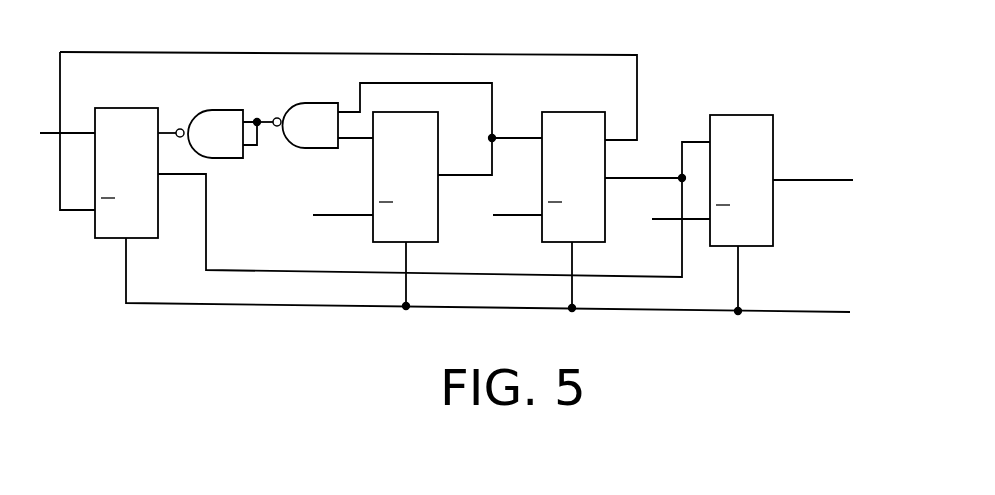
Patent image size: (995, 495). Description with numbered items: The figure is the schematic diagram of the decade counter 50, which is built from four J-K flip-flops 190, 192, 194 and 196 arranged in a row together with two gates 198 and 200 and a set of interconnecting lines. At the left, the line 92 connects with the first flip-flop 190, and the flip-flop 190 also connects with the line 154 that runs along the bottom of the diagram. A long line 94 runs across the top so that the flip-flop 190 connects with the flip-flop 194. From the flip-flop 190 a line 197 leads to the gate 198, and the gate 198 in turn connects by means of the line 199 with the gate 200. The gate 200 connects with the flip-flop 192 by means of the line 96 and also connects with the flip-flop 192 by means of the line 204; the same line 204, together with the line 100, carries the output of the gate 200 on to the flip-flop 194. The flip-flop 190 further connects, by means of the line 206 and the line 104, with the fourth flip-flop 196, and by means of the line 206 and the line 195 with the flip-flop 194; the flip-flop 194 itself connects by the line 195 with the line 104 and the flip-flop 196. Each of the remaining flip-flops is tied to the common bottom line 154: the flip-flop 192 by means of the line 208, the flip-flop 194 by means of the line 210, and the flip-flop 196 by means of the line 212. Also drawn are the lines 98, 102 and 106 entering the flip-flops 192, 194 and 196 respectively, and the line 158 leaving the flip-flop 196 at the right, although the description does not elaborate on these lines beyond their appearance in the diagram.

The decade counter 50 is at (350, 38).
The line 92 is at (75, 133).
The line 94 is at (157, 52).
The line 96 is at (355, 140).
The reset line 98 is at (325, 215).
The line 100 is at (515, 138).
The reset line 102 is at (520, 215).
The line 104 is at (680, 150).
The reset line 106 is at (665, 220).
The line 154 is at (815, 312).
The output line 158 is at (810, 180).
The J-K flip-flop 190 is at (130, 108).
The J-K flip-flop 192 is at (400, 112).
The J-K flip-flop 194 is at (590, 78).
The line 195 is at (632, 179).
The J-K flip-flop 196 is at (765, 115).
The line 197 is at (178, 124).
The gate 198 is at (222, 134).
The line 199 is at (257, 121).
The gate 200 is at (310, 125).
The line 204 is at (408, 83).
The line 206 is at (210, 270).
The line 208 is at (406, 262).
The line 210 is at (572, 262).
The line 212 is at (738, 278).